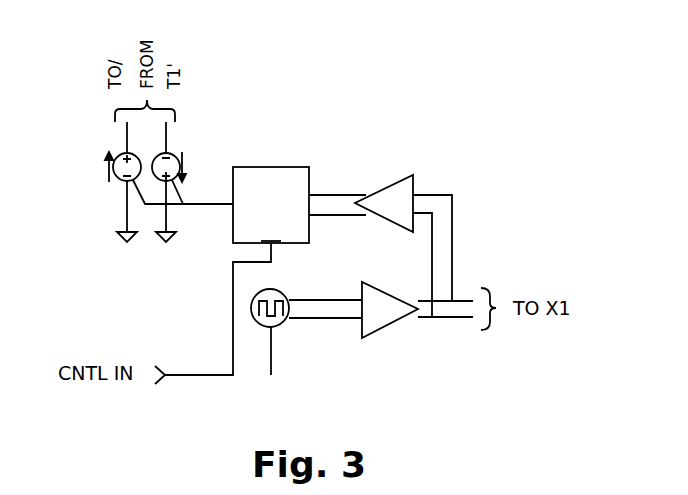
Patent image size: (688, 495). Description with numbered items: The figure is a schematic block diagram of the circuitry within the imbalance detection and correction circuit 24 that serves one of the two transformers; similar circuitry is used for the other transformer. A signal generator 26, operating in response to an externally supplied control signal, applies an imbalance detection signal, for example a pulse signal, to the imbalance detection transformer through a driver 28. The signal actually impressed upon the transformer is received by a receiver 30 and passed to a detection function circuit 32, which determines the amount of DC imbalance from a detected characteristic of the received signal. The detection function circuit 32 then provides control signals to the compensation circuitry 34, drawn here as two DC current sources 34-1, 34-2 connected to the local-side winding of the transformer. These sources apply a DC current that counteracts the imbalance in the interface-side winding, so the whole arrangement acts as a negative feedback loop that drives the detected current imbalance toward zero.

The imbalance detection and correction circuit 24 is at (402, 83).
The signal generator 26 is at (276, 327).
The driver 28 is at (376, 323).
The receiver 30 is at (412, 177).
The detection function circuit 32 is at (271, 205).
The compensation circuitry 34 is at (92, 249).
The DC current source 34-1 is at (119, 183).
The DC current source 34-2 is at (177, 152).